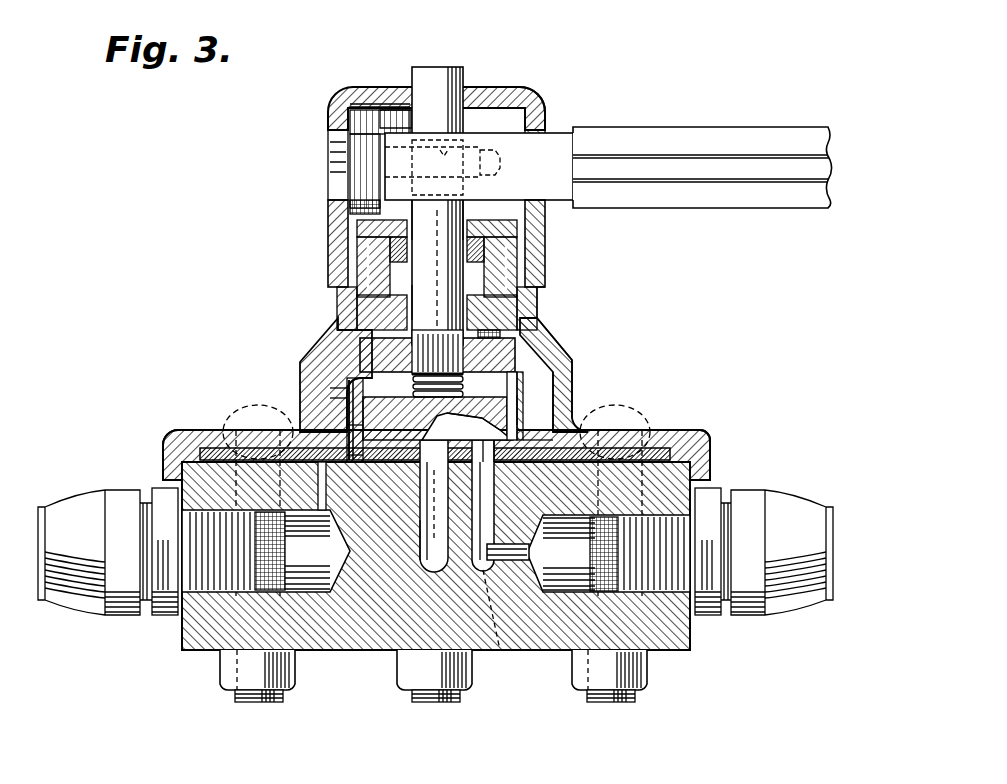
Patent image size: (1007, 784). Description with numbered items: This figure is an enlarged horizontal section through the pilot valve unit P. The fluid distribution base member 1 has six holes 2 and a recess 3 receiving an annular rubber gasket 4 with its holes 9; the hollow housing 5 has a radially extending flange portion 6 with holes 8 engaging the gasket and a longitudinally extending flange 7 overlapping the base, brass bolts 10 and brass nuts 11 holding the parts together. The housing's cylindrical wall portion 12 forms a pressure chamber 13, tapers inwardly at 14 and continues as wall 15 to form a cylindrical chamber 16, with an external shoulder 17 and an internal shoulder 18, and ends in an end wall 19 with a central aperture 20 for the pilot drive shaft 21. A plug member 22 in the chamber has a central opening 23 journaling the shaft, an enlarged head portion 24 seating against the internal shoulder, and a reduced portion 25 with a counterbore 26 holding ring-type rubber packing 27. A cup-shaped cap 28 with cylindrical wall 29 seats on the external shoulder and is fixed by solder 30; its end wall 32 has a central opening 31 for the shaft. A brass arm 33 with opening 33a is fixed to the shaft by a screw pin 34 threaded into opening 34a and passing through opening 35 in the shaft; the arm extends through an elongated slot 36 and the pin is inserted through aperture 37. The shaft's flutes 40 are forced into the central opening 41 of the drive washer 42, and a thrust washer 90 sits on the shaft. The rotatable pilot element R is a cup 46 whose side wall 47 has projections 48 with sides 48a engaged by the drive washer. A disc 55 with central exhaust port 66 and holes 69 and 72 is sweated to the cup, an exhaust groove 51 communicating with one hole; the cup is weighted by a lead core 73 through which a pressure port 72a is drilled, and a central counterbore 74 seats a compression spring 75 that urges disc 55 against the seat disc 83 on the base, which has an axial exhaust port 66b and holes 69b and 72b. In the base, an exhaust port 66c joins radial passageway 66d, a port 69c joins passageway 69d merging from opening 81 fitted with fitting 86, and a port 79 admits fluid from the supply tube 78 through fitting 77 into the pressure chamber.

The fluid distribution base member 1 is at (200, 652).
The holes 2 is at (300, 640).
The recess 3 is at (678, 432).
The annular rubber gasket 4 is at (208, 430).
The hollow housing 5 is at (574, 366).
The radially extending flange portion 6 is at (705, 436).
The longitudinally extending flange 7 is at (712, 470).
The holes 8 is at (240, 426).
The holes 9 is at (258, 420).
The brass bolts 10 is at (248, 702).
The brass nuts 11 is at (286, 692).
The cylindrical wall portion 12 is at (573, 379).
The pressure chamber 13 is at (573, 401).
The tapered portion 14 is at (556, 331).
The longitudinally extending wall 15 is at (338, 322).
The cylindrical chamber 16 is at (500, 276).
The external shoulder 17 is at (334, 290).
The internal shoulder 18 is at (540, 298).
The end wall 19 is at (480, 230).
The central aperture 20 is at (413, 236).
The pilot drive shaft 21 is at (441, 70).
The plug member 22 is at (388, 246).
The central opening 23 is at (413, 304).
The enlarged head portion 24 is at (358, 306).
The reduced longitudinally extending portion 25 is at (532, 262).
The counterbore 26 is at (530, 240).
The ring-type rubber packing 27 is at (372, 266).
The cup-shaped cap 28 is at (378, 94).
The cylindrical wall 29 is at (328, 218).
The solder 30 is at (352, 228).
The central opening 31 is at (481, 92).
The end wall 32 is at (396, 86).
The brass arm 33 is at (778, 130).
The opening 33a is at (496, 180).
The screw pin 34 is at (376, 148).
The opening 34a is at (385, 200).
The opening 35 is at (460, 128).
The elongated slot 36 is at (548, 130).
The aperture 37 is at (328, 152).
The serrations or flutes 40 is at (432, 336).
The central opening 41 is at (500, 353).
The drive washer 42 is at (561, 345).
The cup 46 is at (358, 382).
The side wall 47 is at (360, 388).
The projections 48 is at (358, 346).
The sides 48a is at (519, 376).
The exhaust groove 51 is at (512, 416).
The disc 55 is at (526, 441).
The central exhaust port 66 is at (447, 430).
The axial exhaust port 66b is at (436, 506).
The axial exhaust port 66c is at (421, 526).
The radial passageway 66d is at (443, 505).
The hole 69 is at (500, 438).
The hole 69b is at (488, 505).
The port 69c is at (498, 642).
The radial passageway 69d is at (531, 554).
The hole 72 is at (350, 442).
The pressure port 72a is at (344, 419).
The hole 72b is at (342, 452).
The lead core 73 is at (452, 386).
The central counterbore 74 is at (441, 421).
The compression spring 75 is at (356, 396).
The fitting 77 is at (163, 616).
The supply tube 78 is at (44, 602).
The port 79 is at (325, 493).
The radially extending opening 81 is at (838, 602).
The disc 83 is at (520, 455).
The fitting 86 is at (708, 614).
The thrust washer 90 is at (480, 337).
The pilot valve unit P is at (526, 92).
The rotatable pilot element R is at (518, 407).